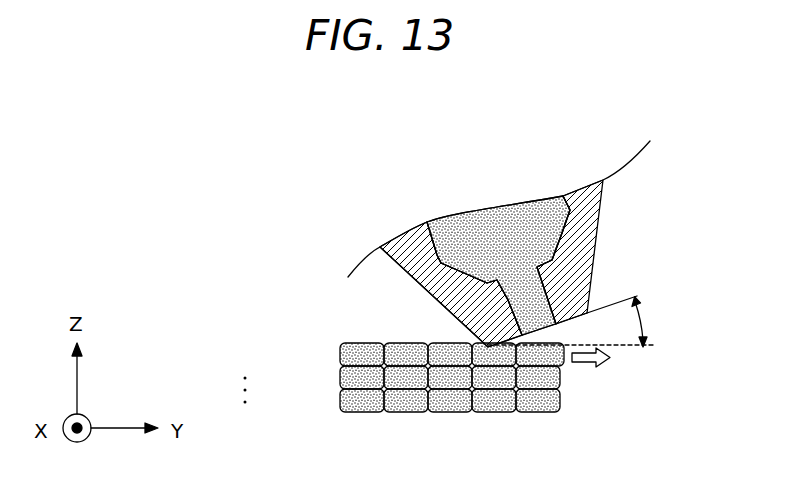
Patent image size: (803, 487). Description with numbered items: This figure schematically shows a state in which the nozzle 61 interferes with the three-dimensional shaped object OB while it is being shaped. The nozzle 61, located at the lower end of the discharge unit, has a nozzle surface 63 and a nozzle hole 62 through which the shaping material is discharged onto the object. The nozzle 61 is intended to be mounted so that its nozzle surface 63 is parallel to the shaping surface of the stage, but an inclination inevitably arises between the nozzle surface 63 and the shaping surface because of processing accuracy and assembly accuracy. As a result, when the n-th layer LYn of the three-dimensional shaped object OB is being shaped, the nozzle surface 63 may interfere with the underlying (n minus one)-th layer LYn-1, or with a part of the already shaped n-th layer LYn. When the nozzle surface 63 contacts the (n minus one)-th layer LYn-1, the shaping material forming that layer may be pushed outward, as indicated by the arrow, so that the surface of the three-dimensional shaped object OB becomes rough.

The nozzle 61 is at (451, 244).
The nozzle hole 62 is at (515, 323).
The nozzle surface 63 is at (575, 326).
The three-dimensional shaped object OB is at (459, 355).
The n-th layer LYn is at (566, 344).
The (n-1)-th layer LYn-1 is at (340, 352).